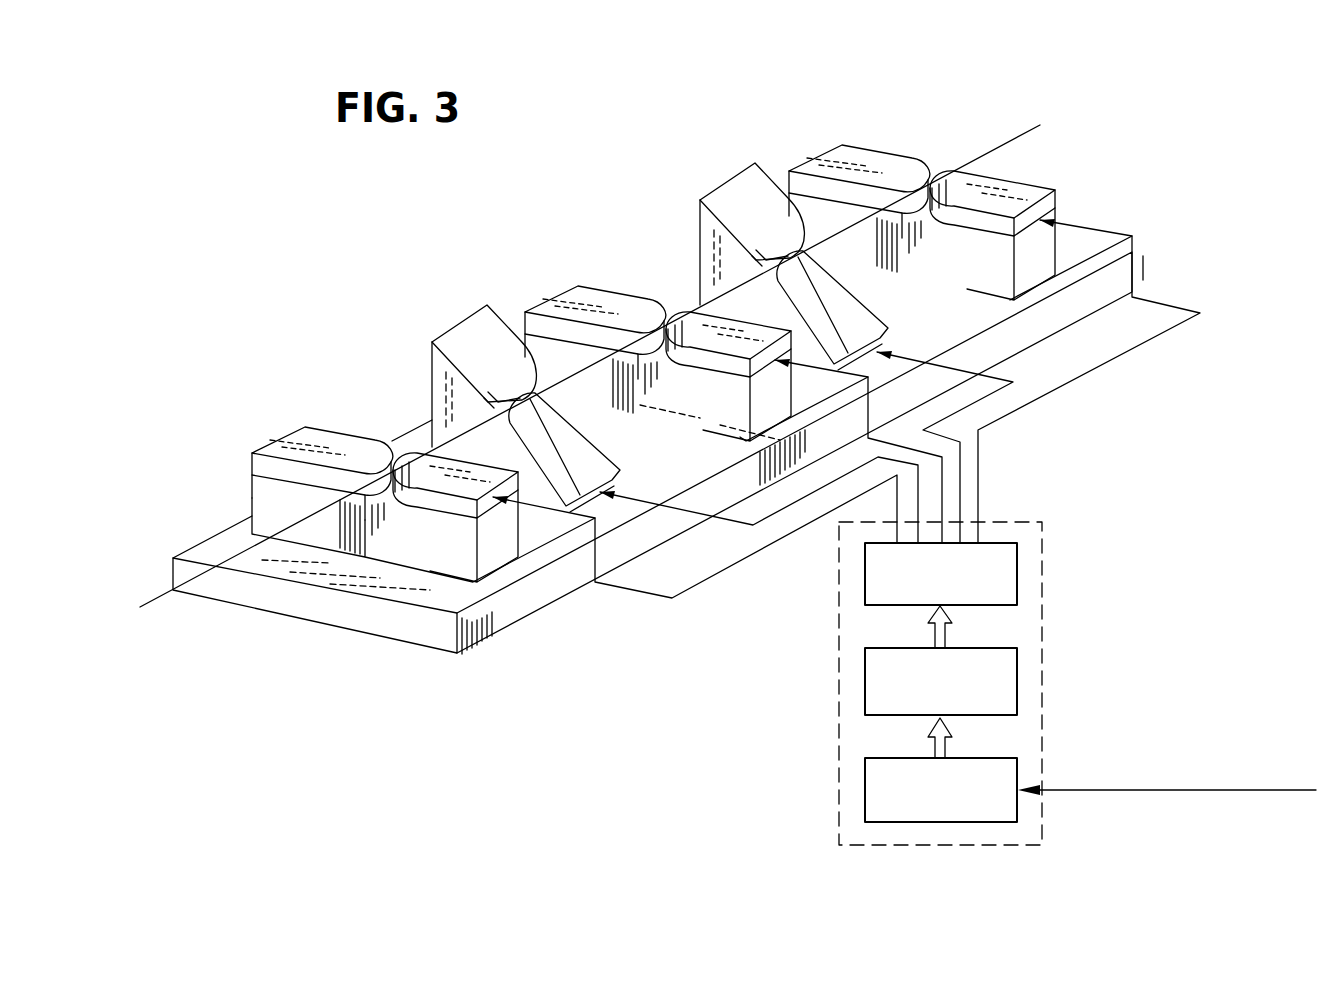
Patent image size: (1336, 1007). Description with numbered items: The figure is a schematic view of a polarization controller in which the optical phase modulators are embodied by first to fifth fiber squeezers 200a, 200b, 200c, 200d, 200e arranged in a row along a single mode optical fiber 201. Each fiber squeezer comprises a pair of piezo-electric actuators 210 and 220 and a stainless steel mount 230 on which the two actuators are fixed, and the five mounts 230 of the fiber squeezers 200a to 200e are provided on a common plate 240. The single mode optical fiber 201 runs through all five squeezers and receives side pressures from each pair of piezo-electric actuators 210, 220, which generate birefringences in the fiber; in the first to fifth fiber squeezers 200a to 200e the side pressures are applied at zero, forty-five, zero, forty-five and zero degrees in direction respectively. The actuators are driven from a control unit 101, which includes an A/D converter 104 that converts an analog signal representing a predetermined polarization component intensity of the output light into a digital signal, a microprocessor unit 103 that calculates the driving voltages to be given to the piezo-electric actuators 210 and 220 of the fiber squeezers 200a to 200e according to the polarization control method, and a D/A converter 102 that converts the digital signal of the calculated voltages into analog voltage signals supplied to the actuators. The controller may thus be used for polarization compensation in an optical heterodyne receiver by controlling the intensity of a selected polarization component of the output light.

The first fiber squeezer 200a is at (290, 435).
The second fiber squeezer 200b is at (455, 328).
The third fiber squeezer 200c is at (563, 287).
The fourth fiber squeezer 200d is at (727, 180).
The fifth fiber squeezer 200e is at (1032, 292).
The piezo-electric actuator 210 is at (890, 170).
The piezo-electric actuator 220 is at (997, 195).
The stainless steel mount 230 is at (1030, 262).
The common plate 240 is at (1137, 287).
The single mode optical fiber 201 is at (158, 600).
The control unit 101 is at (1035, 643).
The D/A converter 102 is at (1017, 573).
The microprocessor unit 103 is at (1017, 681).
The A/D converter 104 is at (863, 787).